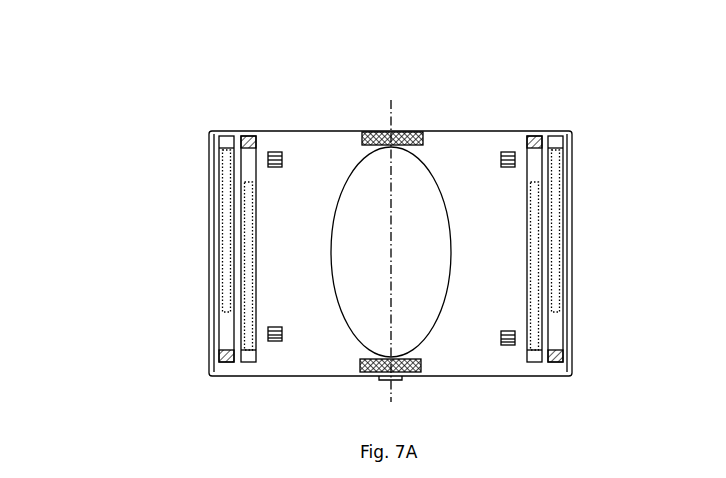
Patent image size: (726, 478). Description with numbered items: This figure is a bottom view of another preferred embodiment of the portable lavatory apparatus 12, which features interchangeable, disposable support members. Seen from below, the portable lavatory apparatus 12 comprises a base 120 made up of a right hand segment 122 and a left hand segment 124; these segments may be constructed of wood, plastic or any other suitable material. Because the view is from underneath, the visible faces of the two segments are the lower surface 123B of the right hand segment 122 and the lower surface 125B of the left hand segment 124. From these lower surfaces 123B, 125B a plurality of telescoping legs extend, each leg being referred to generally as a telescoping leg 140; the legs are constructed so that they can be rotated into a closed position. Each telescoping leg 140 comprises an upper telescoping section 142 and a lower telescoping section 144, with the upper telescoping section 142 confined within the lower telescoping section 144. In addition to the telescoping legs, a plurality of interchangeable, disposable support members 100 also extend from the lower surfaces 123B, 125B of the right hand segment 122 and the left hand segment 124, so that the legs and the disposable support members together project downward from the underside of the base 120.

The portable lavatory apparatus 12 is at (150, 112).
The right hand segment 122 is at (586, 180).
The lower surface 125B is at (320, 160).
The lower surface 123B is at (474, 155).
The interchangeable, disposable support member 100 is at (284, 162).
The upper telescoping section 142 is at (228, 218).
The left hand segment 124 is at (203, 303).
The telescoping leg 140 is at (563, 246).
The lower telescoping section 144 is at (555, 331).
The base 120 is at (658, 477).